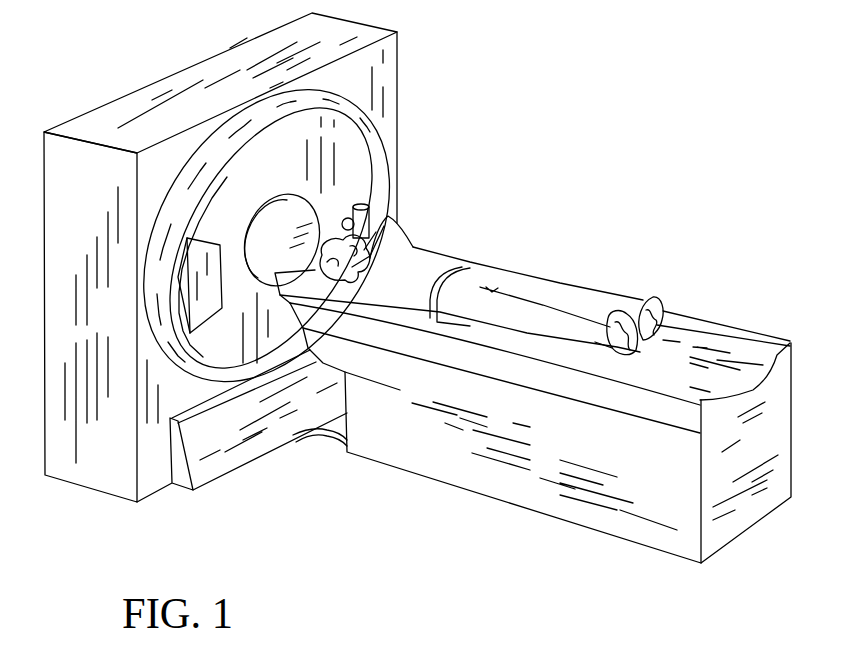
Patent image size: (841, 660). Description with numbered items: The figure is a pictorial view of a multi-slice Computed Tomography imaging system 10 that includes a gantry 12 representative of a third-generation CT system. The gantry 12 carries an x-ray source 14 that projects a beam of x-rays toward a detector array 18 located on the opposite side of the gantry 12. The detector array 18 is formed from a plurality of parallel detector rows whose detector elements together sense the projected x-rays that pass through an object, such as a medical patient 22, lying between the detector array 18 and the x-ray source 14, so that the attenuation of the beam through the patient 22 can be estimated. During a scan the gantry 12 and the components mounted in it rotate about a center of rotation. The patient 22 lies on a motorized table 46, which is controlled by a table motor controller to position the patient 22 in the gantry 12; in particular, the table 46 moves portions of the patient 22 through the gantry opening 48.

The CT imaging system 10 is at (314, 460).
The gantry 12 is at (213, 133).
The x-ray source 14 is at (368, 212).
The detector array 18 is at (200, 315).
The patient 22 is at (423, 243).
The motorized table 46 is at (433, 457).
The gantry opening 48 is at (320, 212).